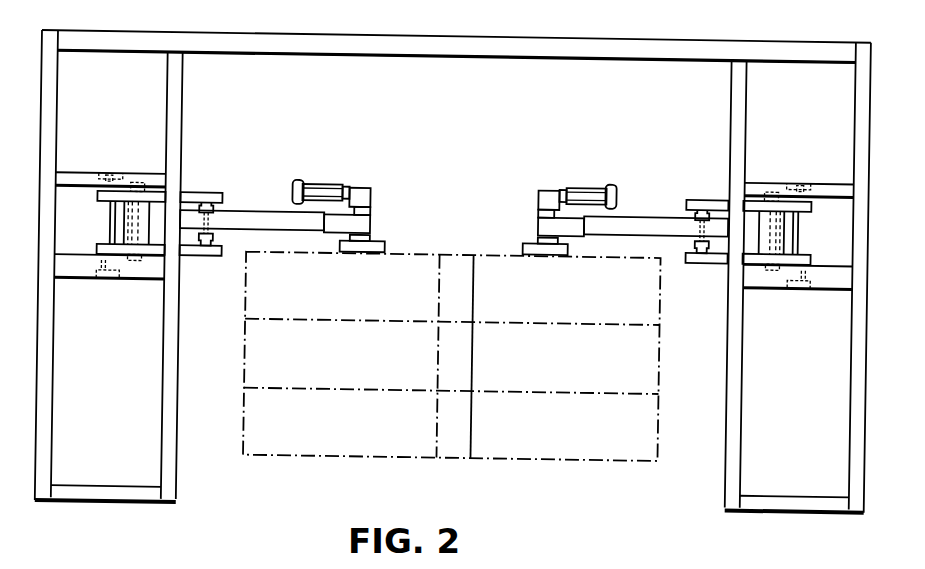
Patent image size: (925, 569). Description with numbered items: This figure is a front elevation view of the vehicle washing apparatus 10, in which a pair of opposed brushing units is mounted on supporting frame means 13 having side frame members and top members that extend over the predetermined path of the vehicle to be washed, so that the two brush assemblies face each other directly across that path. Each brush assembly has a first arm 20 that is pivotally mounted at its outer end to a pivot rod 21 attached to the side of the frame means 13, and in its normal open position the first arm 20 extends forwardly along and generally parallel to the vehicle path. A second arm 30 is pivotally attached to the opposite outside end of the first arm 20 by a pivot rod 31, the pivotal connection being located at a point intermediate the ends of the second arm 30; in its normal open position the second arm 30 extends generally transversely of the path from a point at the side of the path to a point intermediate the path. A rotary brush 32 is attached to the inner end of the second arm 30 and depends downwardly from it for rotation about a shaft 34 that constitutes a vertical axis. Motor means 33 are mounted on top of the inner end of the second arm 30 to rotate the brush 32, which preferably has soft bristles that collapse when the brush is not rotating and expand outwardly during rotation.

The vehicle washing apparatus 10 is at (453, 256).
The frame means 13 is at (674, 30).
The first arm 20 is at (193, 187).
The pivot rod 21 is at (113, 217).
The second arm 30 is at (252, 213).
The pivot rod 31 is at (217, 234).
The rotary brush 32 is at (322, 433).
The motor means 33 is at (323, 182).
The shaft 34 is at (374, 238).